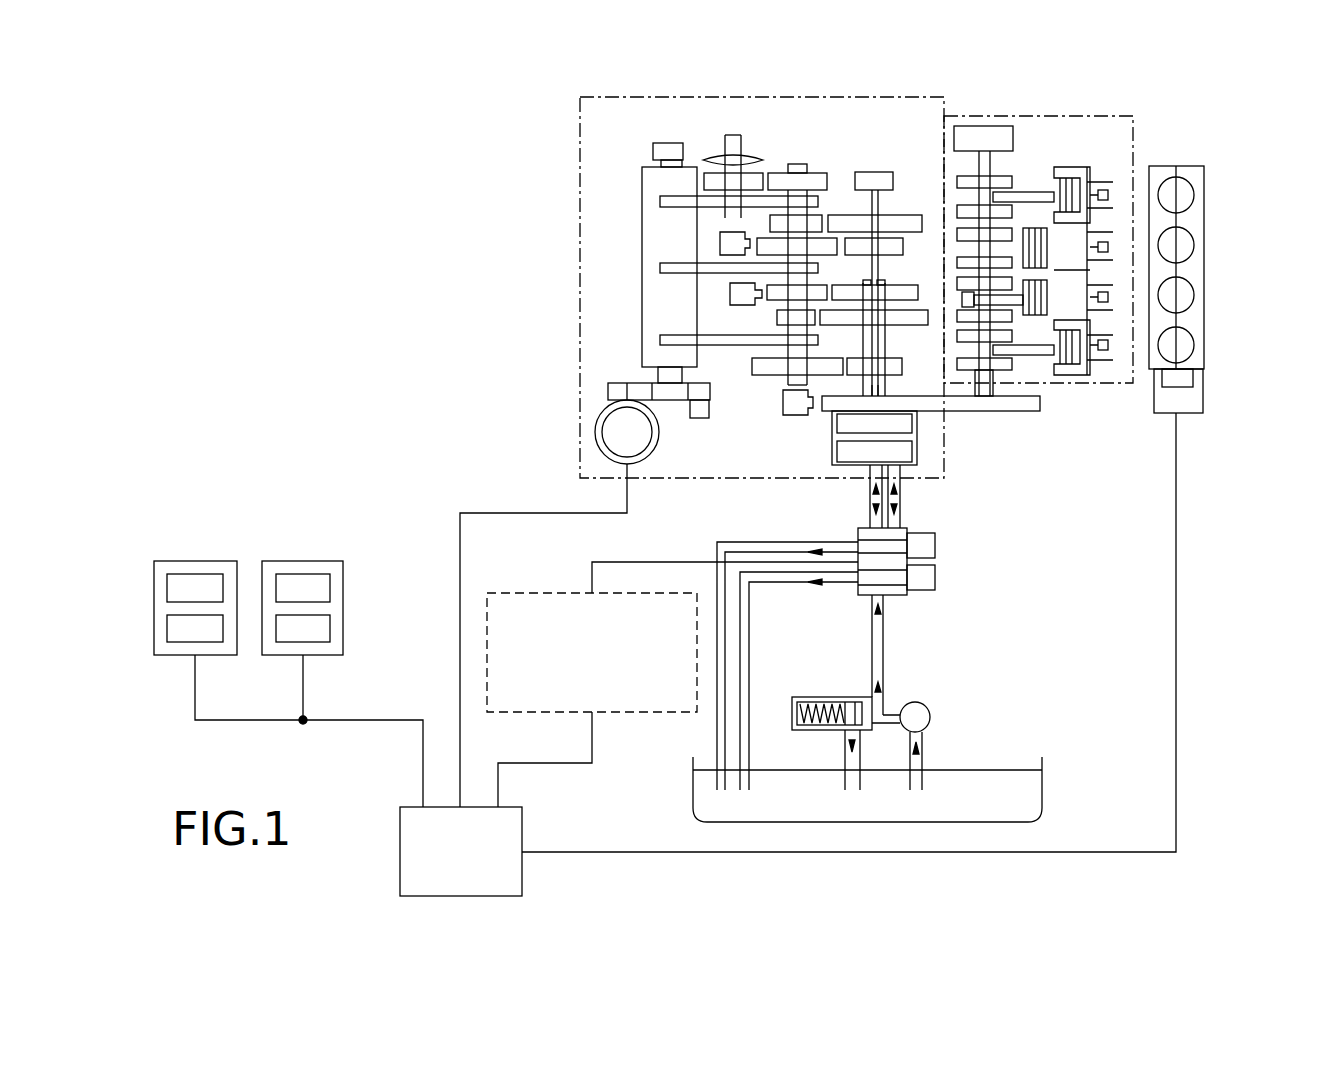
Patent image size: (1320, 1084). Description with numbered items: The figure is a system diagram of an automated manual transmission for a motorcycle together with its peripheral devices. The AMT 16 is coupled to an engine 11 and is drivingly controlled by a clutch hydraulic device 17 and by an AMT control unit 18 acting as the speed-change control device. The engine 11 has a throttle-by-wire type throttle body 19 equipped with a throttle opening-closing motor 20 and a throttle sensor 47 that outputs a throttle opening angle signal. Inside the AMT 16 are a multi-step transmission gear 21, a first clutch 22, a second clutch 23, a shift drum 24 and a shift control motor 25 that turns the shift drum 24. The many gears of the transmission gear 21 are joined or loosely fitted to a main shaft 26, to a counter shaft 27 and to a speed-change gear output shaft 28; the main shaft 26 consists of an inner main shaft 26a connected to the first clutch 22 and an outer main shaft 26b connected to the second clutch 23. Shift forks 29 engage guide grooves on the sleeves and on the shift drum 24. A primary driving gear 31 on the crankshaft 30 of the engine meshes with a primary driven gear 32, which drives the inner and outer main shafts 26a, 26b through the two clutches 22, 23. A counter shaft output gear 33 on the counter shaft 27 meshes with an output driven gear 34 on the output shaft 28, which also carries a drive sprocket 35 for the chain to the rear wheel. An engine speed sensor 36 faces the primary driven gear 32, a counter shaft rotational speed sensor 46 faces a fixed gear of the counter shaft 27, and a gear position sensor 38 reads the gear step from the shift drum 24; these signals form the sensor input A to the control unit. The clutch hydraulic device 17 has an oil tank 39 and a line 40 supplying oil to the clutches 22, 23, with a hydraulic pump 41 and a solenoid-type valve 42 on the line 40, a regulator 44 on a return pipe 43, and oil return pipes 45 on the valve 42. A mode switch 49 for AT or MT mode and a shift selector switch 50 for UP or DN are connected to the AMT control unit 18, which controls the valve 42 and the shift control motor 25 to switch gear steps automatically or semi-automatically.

The engine 11 is at (1150, 128).
The automated manual transmission 16 is at (574, 166).
The clutch hydraulic device 17 is at (1058, 792).
The AMT control unit 18 is at (523, 822).
The throttle body 19 is at (1206, 183).
The throttle opening-closing motor 20 is at (1190, 413).
The multi-step transmission gear 21 is at (736, 430).
The first clutch 22 is at (917, 462).
The second clutch 23 is at (912, 425).
The shift drum 24 is at (652, 182).
The shift control motor 25 is at (595, 432).
The main shaft 26 is at (892, 266).
The inner main shaft 26a is at (880, 385).
The outer main shaft 26b is at (886, 338).
The counter shaft 27 is at (793, 352).
The speed-change gear output shaft 28 is at (744, 220).
The shift forks 29 is at (668, 206).
The crankshaft 30 is at (995, 388).
The primary driving gear 31 is at (1040, 406).
The primary driven gear 32 is at (826, 412).
The counter shaft output gear 33 is at (820, 172).
The output driven gear 34 is at (760, 172).
The drive sprocket 35 is at (724, 160).
The engine speed sensor 36 is at (783, 404).
The gear position sensor 38 is at (653, 150).
The oil tank 39 is at (700, 794).
The line 40 is at (885, 655).
The hydraulic pump 41 is at (930, 717).
The valve 42 is at (935, 546).
The return pipe 43 is at (845, 748).
The regulator 44 is at (805, 697).
The oil return pipes 45 is at (740, 750).
The counter shaft rotational speed sensor 46 is at (730, 294).
The throttle sensor 47 is at (1194, 380).
The mode switch 49 is at (325, 560).
The shift selector switch 50 is at (185, 560).
The sensor input A is at (520, 592).